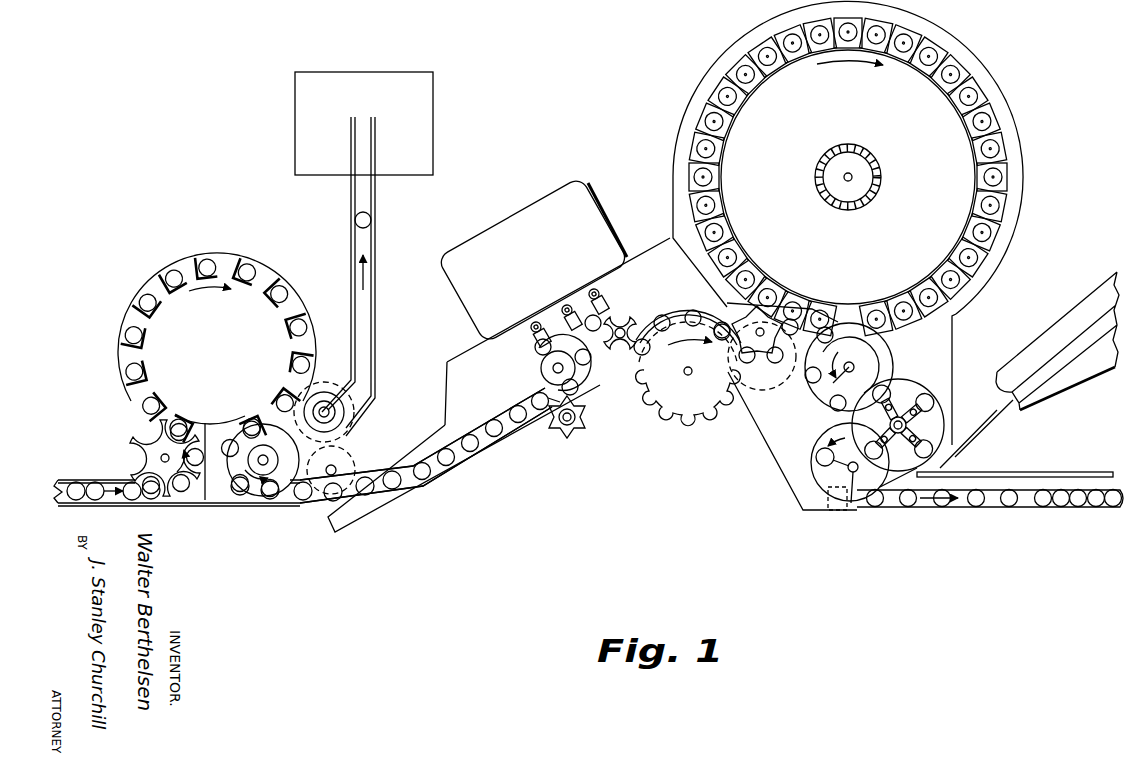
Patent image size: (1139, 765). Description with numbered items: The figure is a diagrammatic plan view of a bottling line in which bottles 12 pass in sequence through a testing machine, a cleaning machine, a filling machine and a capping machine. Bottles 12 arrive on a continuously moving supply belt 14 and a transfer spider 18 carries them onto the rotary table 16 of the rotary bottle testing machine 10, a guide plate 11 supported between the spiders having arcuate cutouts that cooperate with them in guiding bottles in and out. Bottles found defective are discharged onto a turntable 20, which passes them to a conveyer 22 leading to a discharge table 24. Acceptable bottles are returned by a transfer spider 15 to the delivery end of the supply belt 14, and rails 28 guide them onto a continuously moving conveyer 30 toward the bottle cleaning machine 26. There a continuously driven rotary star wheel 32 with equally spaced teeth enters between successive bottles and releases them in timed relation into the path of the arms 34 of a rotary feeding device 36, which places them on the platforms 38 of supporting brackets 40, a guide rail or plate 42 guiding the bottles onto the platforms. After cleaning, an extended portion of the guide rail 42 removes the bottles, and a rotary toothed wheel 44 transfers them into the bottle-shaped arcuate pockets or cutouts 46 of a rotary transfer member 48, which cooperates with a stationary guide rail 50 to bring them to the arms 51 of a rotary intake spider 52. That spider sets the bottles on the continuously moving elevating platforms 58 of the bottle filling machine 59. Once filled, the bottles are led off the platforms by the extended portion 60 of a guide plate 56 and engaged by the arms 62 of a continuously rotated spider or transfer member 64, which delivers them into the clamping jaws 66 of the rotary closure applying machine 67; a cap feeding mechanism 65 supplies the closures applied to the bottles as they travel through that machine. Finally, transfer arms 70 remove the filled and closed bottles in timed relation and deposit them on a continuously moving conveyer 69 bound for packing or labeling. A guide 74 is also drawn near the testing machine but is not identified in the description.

The rotary bottle testing machine 10 is at (142, 265).
The guide plate 11 is at (203, 497).
The bottles 12 is at (125, 497).
The supply belt 14 is at (63, 484).
The transfer spider 15 is at (256, 482).
The rotary table 16 is at (118, 356).
The transfer spider 18 is at (146, 447).
The turntable 20 is at (350, 410).
The conveyer 22 is at (375, 314).
The discharge table 24 is at (433, 135).
The bottle cleaning machine 26 is at (518, 211).
The rails 28 is at (378, 497).
The conveyer 30 is at (448, 470).
The rotary star wheel 32 is at (565, 433).
The arms 34 is at (553, 387).
The rotary feeding device 36 is at (532, 369).
The platforms 38 is at (540, 340).
The supporting brackets 40 is at (533, 325).
The guide rail or plate 42 is at (553, 318).
The rotary toothed wheel 44 is at (627, 328).
The arcuate pockets or cutouts 46 is at (655, 412).
The rotary transfer member 48 is at (690, 423).
The stationary guide rail 50 is at (677, 300).
The arms 51 is at (752, 366).
The rotary intake spider 52 is at (727, 343).
The guide plate 56 is at (767, 443).
The elevating platforms 58 is at (733, 257).
The bottle filling machine 59 is at (688, 92).
The extended portion 60 is at (809, 312).
The arms 62 is at (892, 352).
The spider or transfer member 64 is at (832, 384).
The cap feeding mechanism 65 is at (983, 441).
The clamping jaws 66 is at (892, 382).
The rotary closure applying machine 67 is at (941, 384).
The conveyer 69 is at (882, 508).
The transfer arms 70 is at (828, 490).
The guide 74 is at (167, 404).